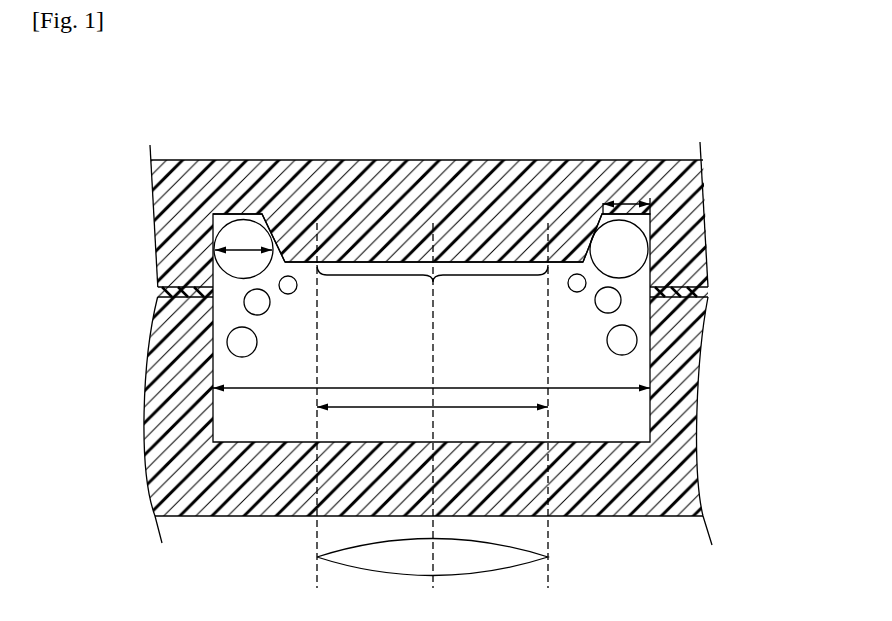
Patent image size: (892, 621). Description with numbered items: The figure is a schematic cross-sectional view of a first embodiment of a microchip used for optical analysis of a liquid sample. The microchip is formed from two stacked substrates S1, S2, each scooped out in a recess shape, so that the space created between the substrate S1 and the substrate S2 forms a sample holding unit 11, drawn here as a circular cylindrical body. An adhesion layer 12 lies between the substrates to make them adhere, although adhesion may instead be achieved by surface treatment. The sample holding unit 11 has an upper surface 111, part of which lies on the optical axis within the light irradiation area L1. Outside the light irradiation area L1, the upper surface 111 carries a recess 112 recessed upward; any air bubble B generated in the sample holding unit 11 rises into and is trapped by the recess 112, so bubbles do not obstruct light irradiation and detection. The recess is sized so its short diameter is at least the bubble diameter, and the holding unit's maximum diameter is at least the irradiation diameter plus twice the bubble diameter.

The substrate S1 is at (542, 177).
The substrate S2 is at (608, 503).
The adhesion layer 12 is at (160, 292).
The sample holding unit 11 is at (272, 372).
The upper surface 111 is at (367, 262).
The recess 112 is at (230, 214).
The air bubble B is at (620, 253).
The light irradiation area L1 is at (432, 289).